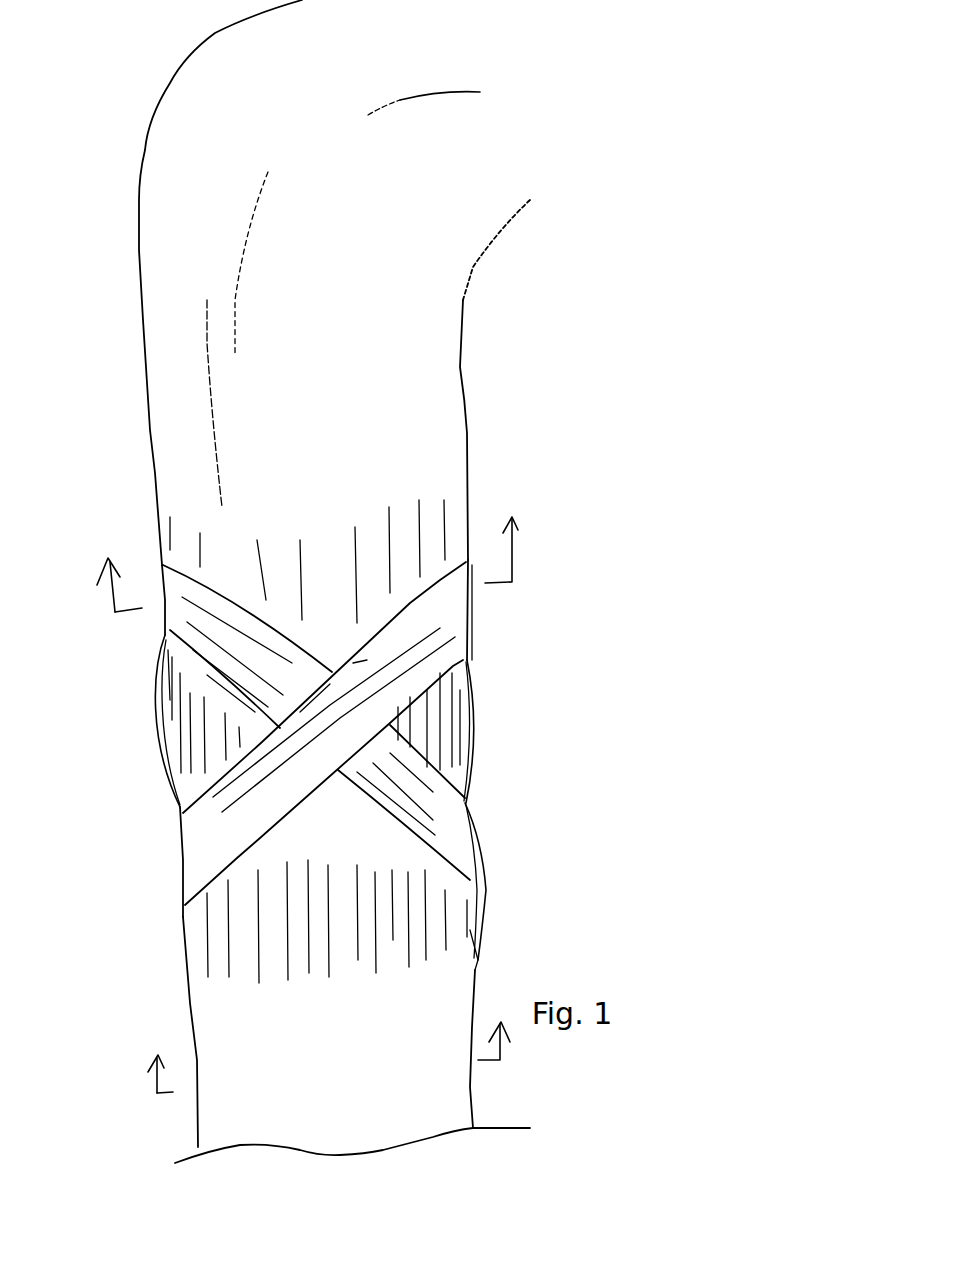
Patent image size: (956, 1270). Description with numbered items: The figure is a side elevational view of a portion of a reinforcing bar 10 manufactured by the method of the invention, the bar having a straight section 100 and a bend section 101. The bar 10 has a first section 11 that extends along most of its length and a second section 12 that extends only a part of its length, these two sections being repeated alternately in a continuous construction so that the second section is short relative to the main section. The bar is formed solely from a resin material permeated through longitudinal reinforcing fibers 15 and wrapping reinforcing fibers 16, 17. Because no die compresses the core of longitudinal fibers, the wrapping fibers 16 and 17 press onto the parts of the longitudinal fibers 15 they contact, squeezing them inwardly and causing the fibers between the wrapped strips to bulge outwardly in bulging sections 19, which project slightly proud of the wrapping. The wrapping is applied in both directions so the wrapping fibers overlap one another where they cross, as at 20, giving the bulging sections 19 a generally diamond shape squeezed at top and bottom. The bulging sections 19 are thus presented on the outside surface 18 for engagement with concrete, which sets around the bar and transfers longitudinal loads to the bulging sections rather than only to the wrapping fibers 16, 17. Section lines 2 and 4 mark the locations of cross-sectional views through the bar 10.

The bend section 101 is at (522, 320).
The straight section 100 is at (563, 810).
The reinforcing bar 10 is at (505, 895).
The first section 11 is at (133, 793).
The second section 12 is at (467, 1098).
The longitudinal reinforcing fibers 15 is at (207, 935).
The wrapping reinforcing fiber 16 is at (465, 805).
The wrapping reinforcing fiber 17 is at (450, 627).
The outside surface 18 is at (480, 960).
The bulging sections 19 is at (153, 710).
The crossing of wrapping fibers 20 is at (335, 707).
The section line 2- 2 is at (307, 570).
The section line 4- 4 is at (323, 1072).